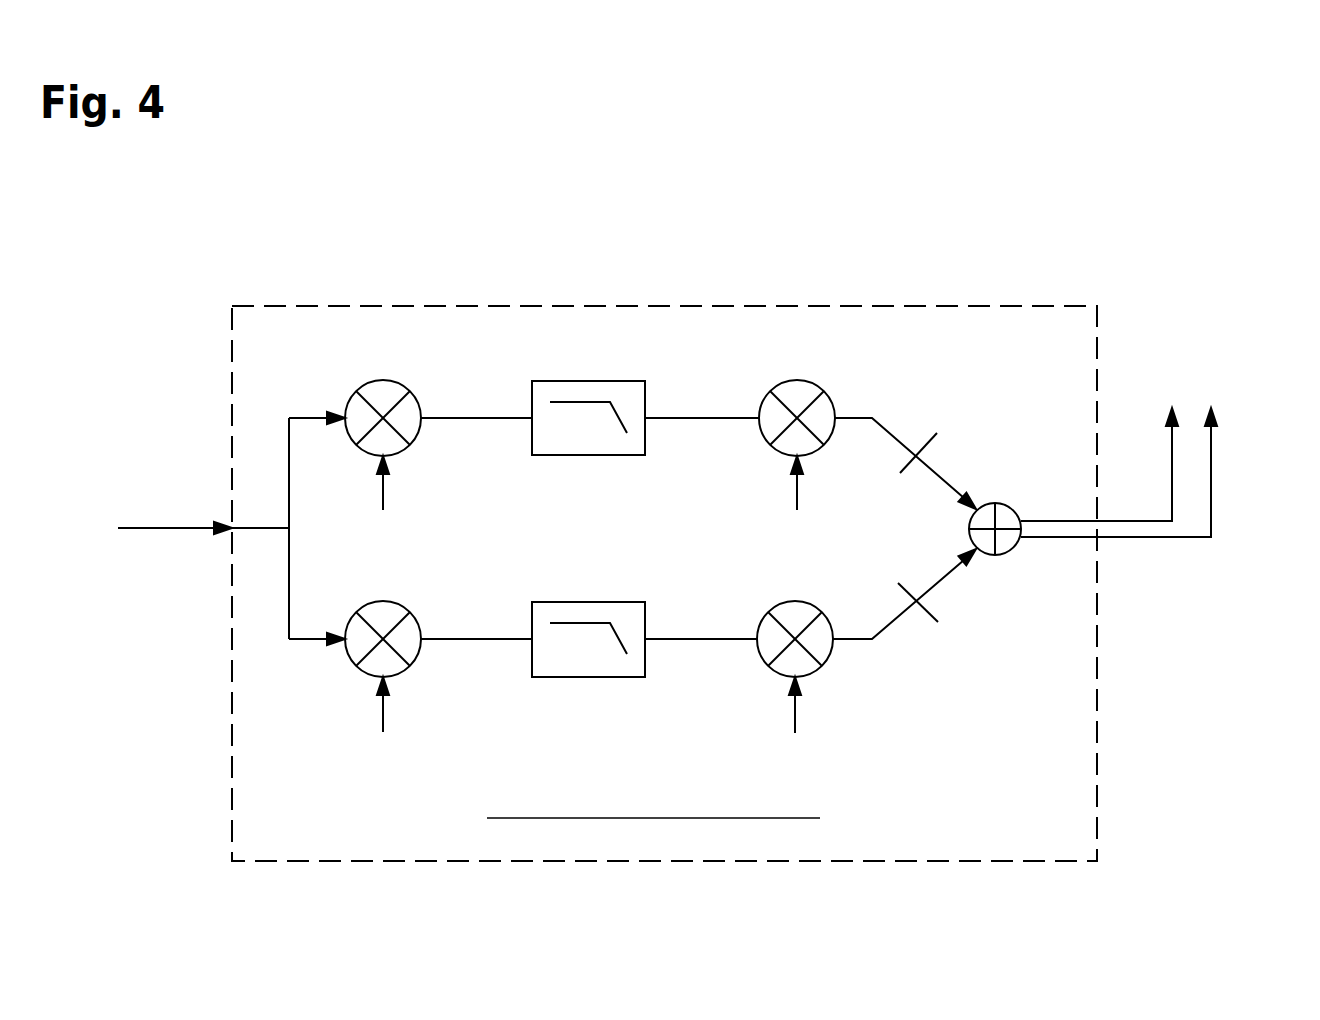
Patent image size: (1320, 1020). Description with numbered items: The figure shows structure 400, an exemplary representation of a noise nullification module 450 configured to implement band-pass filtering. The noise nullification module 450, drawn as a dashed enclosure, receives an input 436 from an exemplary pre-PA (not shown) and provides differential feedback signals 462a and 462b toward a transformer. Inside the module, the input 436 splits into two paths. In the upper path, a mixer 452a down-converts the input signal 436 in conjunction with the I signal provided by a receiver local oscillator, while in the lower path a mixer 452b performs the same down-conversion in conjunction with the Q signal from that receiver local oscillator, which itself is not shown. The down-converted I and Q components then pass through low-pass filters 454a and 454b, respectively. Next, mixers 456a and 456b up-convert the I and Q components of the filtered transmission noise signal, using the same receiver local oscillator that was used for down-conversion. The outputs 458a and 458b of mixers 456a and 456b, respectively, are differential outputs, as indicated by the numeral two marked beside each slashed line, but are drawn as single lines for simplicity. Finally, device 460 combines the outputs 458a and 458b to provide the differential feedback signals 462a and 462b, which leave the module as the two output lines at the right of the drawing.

The structure 400 is at (1247, 200).
The noise nullification module 450 is at (620, 306).
The input 436 is at (135, 529).
The mixer 452a is at (392, 380).
The mixer 452b is at (405, 603).
The low-pass filter 454a is at (598, 380).
The low-pass filter 454b is at (598, 602).
The mixer 456a is at (798, 380).
The mixer 456b is at (793, 602).
The output 458a is at (892, 428).
The output 458b is at (887, 628).
The device 460 is at (1010, 503).
The differential feedback signal 462a is at (1165, 518).
The differential feedback signal 462b is at (1162, 540).